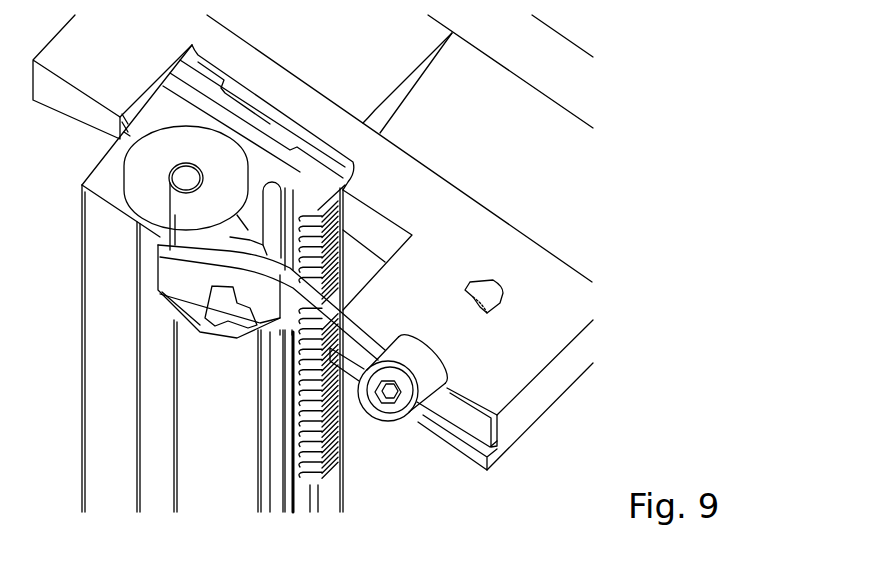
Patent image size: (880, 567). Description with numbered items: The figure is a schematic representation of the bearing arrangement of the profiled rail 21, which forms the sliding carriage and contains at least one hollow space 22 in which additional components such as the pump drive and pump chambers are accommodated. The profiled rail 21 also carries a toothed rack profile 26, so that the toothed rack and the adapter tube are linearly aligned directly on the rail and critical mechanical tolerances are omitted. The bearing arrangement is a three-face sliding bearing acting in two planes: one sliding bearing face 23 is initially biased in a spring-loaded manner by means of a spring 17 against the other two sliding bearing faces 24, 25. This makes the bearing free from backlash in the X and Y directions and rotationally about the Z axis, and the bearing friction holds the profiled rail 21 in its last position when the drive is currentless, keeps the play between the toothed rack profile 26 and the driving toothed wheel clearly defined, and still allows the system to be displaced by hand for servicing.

The spring 17 is at (348, 328).
The profiled rail 21 is at (107, 410).
The hollow space 22 is at (203, 158).
The sliding bearing face 23 is at (152, 236).
The sliding bearing face 24 is at (257, 130).
The sliding bearing face 25 is at (160, 100).
The toothed rack profile 26 is at (343, 230).